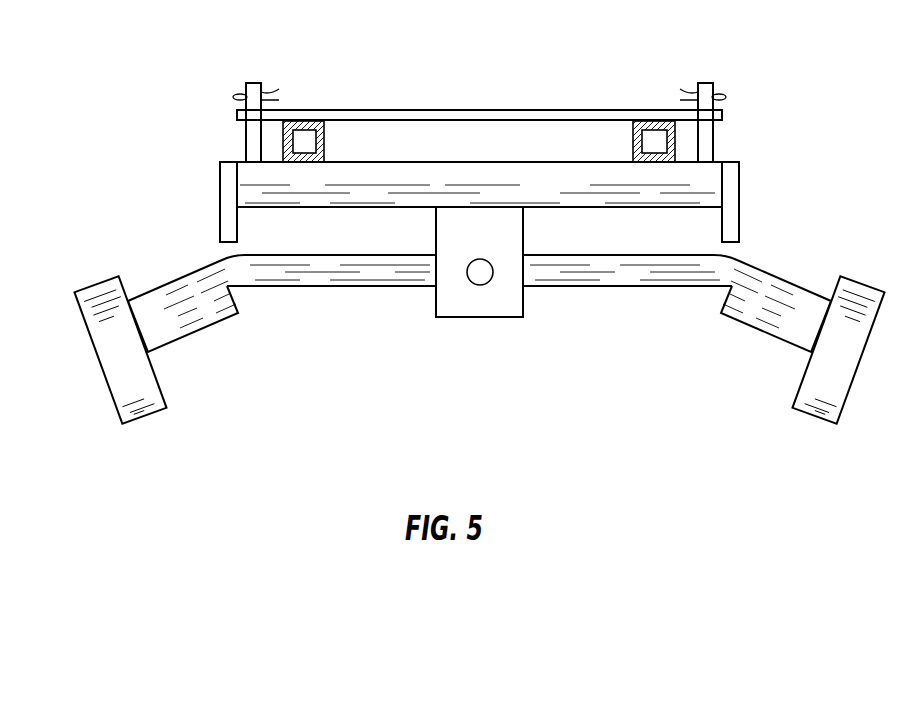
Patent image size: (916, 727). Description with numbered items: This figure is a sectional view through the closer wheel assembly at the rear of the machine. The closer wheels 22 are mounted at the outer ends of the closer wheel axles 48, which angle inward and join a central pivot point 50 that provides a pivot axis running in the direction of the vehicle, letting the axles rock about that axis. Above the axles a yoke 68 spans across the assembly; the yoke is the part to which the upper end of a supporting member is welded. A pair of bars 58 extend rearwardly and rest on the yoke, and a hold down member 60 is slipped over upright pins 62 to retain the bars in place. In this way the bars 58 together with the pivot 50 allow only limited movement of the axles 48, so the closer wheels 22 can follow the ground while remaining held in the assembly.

The closer wheel 22 is at (105, 280).
The closer wheel axle 48 is at (203, 267).
The pivot point 50 is at (479, 278).
The bar 58 is at (325, 158).
The hold down member 60 is at (453, 110).
The pin 62 is at (256, 83).
The yoke 68 is at (220, 186).